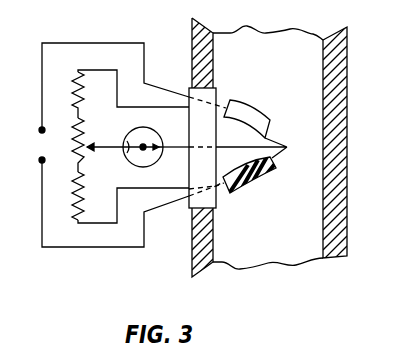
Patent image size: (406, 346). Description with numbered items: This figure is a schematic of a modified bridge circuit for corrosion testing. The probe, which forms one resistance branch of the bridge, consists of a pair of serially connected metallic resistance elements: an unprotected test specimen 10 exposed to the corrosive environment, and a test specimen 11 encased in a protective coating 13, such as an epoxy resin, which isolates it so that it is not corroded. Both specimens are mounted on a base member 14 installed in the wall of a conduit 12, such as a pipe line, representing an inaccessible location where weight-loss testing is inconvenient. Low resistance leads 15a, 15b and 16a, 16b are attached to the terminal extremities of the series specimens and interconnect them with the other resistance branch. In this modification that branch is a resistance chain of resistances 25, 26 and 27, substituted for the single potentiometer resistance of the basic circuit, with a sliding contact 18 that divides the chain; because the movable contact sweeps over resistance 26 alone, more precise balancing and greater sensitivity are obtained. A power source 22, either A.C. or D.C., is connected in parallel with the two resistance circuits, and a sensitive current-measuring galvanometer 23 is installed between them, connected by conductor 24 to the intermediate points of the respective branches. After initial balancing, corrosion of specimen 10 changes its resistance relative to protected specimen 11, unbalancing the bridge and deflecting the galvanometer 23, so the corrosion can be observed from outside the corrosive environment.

The test specimen 10 is at (250, 108).
The test specimen 11 is at (221, 190).
The conduit 12 is at (269, 149).
The protective coating 13 is at (259, 181).
The mounting plate 14 is at (189, 126).
The low resistance lead 15a is at (144, 70).
The low resistance lead 15b is at (84, 70).
The low resistance lead 16a is at (68, 248).
The low resistance lead 16b is at (157, 188).
The sliding contact 18 is at (119, 148).
The power source 22 is at (40, 143).
The galvanometer 23 is at (131, 132).
The conductor 24 is at (178, 149).
The resistance 25 is at (74, 100).
The resistance 26 is at (76, 150).
The resistance 27 is at (74, 210).